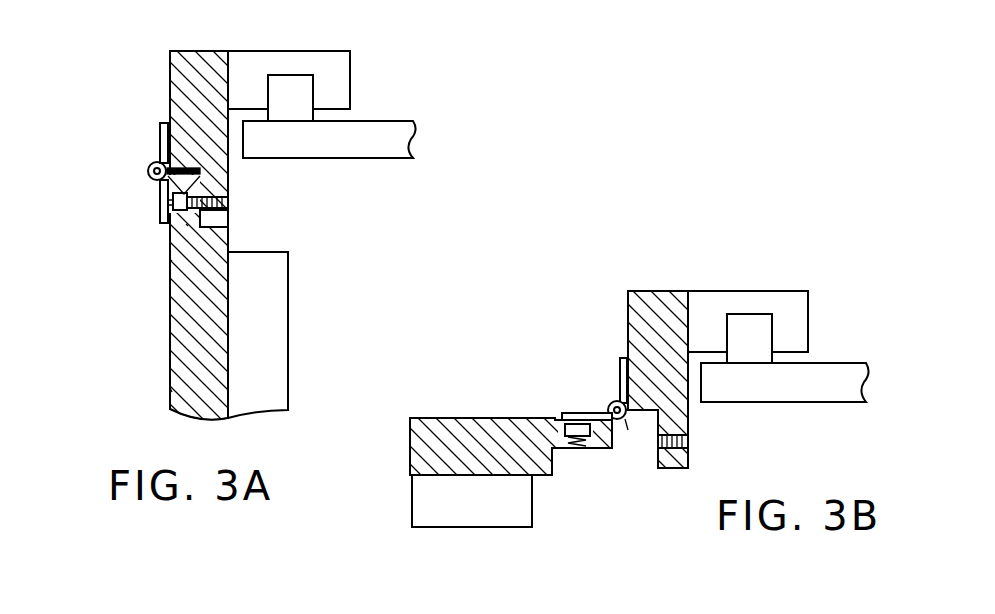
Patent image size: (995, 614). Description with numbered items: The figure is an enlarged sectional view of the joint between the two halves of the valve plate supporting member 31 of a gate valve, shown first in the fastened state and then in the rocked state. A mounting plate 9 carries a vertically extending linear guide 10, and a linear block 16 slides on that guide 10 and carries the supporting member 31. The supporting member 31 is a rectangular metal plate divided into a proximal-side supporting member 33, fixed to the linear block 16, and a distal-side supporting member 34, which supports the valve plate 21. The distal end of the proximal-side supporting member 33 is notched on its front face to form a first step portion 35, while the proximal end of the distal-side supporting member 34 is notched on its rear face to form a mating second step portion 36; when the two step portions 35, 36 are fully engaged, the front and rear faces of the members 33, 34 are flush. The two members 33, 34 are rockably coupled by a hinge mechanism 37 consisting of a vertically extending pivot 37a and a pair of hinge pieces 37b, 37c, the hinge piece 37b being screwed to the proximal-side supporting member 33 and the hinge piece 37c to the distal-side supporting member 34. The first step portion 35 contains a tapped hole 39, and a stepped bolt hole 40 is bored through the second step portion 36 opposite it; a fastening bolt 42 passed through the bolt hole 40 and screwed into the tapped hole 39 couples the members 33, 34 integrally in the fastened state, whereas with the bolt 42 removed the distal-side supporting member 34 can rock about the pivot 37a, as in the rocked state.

In FIG. 3A, the mounting plate 9 is at (391, 117).
In FIG. 3B, the mounting plate 9 is at (848, 380).
In FIG. 3A, the linear guide 10 is at (300, 111).
In FIG. 3B, the linear guide 10 is at (760, 328).
In FIG. 3A, the linear block 16 is at (333, 63).
In FIG. 3B, the linear block 16 is at (788, 302).
In FIG. 3A, the valve plate 21 is at (278, 337).
In FIG. 3B, the valve plate 21 is at (417, 507).
In FIG. 3A, the valve plate supporting member 31 is at (142, 318).
In FIG. 3B, the valve plate supporting member 31 is at (488, 400).
In FIG. 3A, the proximal-side supporting member 33 is at (170, 95).
In FIG. 3B, the proximal-side supporting member 33 is at (628, 306).
In FIG. 3A, the distal-side supporting member 34 is at (172, 390).
In FIG. 3B, the distal-side supporting member 34 is at (437, 432).
In FIG. 3A, the first step portion 35 is at (232, 220).
In FIG. 3A, the second step portion 36 is at (168, 262).
In FIG. 3A, the hinge mechanism 37 is at (137, 160).
In FIG. 3B, the hinge mechanism 37 is at (597, 393).
In FIG. 3A, the pivot 37a is at (150, 174).
In FIG. 3B, the pivot 37a is at (627, 423).
In FIG. 3A, the hinge piece 37b is at (160, 138).
In FIG. 3B, the hinge piece 37b is at (622, 363).
In FIG. 3A, the hinge piece 37c is at (158, 196).
In FIG. 3B, the hinge piece 37c is at (569, 413).
In FIG. 3A, the tapped hole 39 is at (232, 200).
In FIG. 3B, the tapped hole 39 is at (688, 440).
In FIG. 3A, the stepped bolt hole 40 is at (186, 224).
In FIG. 3B, the stepped bolt hole 40 is at (571, 450).
In FIG. 3A, the fastening bolt 42 is at (166, 208).